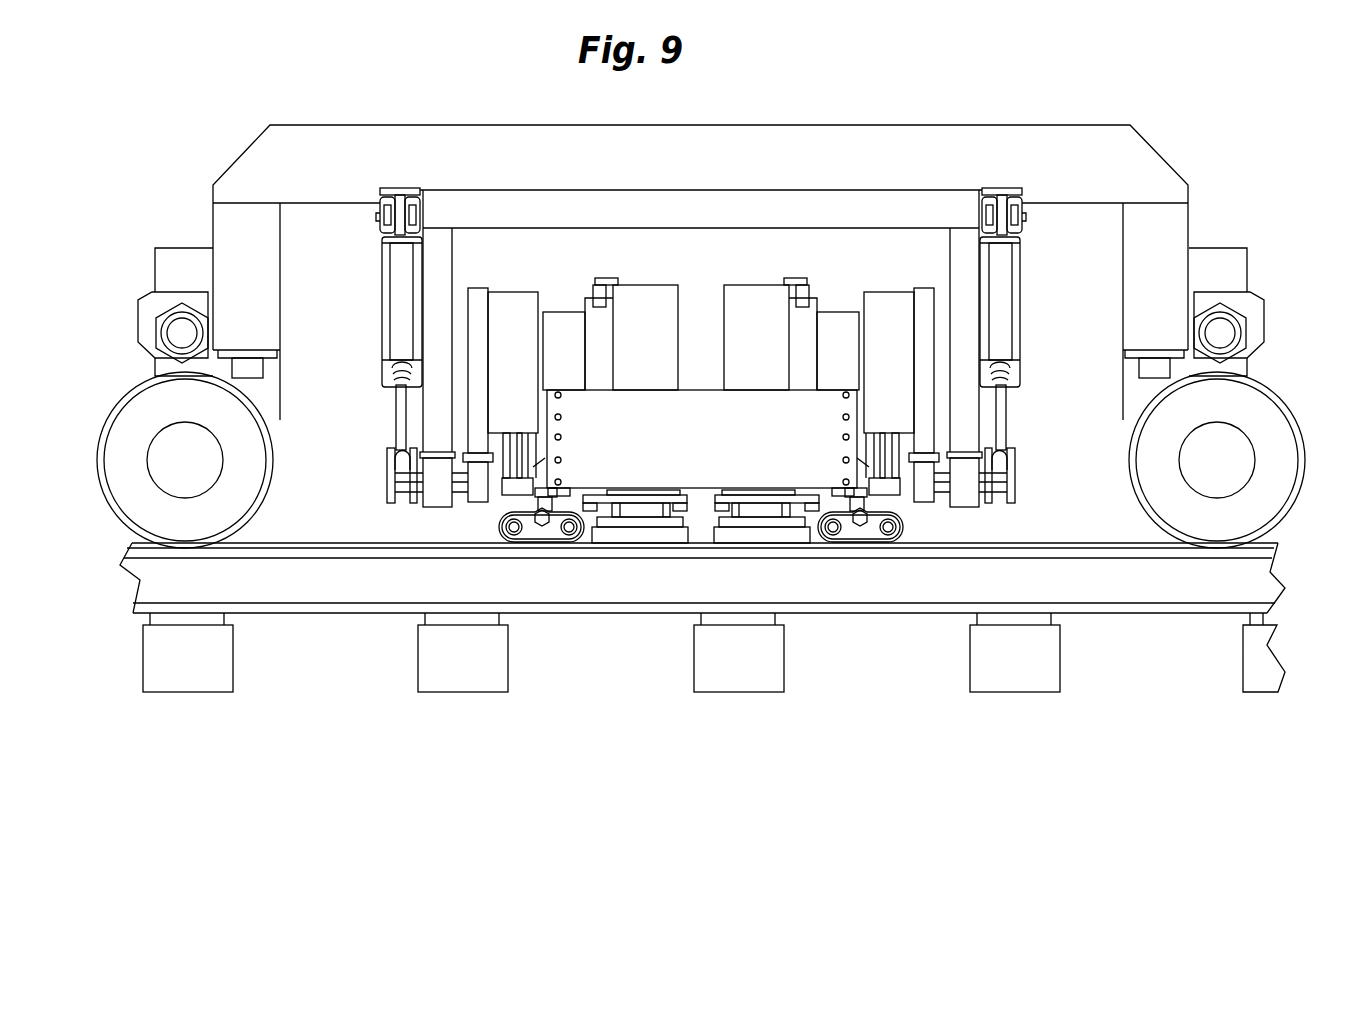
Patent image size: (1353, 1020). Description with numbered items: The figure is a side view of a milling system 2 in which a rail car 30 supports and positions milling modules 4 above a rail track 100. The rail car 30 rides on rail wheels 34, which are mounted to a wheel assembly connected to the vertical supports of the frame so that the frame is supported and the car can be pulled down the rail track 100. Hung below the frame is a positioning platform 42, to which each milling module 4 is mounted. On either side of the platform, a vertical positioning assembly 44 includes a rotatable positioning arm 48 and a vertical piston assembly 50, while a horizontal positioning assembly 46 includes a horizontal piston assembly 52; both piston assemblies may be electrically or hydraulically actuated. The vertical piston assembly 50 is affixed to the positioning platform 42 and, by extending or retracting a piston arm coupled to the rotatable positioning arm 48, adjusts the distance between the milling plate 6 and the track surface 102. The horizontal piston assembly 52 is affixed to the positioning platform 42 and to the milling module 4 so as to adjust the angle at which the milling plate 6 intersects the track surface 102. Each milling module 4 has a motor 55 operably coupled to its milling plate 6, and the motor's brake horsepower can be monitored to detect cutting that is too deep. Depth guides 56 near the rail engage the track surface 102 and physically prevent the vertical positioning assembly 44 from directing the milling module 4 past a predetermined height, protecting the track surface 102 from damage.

The milling system 2 is at (687, 92).
The rail car 30 is at (1035, 125).
The rail wheels 34 is at (272, 456).
The positioning platform 42 is at (848, 229).
The vertical positioning assembly 44 is at (380, 305).
The horizontal positioning assembly 46 is at (378, 208).
The rotatable positioning arm 48 is at (385, 492).
The vertical piston assembly 50 is at (393, 343).
The horizontal piston assembly 52 is at (380, 228).
The milling module 4 is at (645, 285).
The motor 55 is at (723, 305).
The depth guide 56 is at (498, 522).
The milling plate 6 is at (735, 533).
The rail track 100 is at (335, 610).
The track surface 102 is at (330, 543).